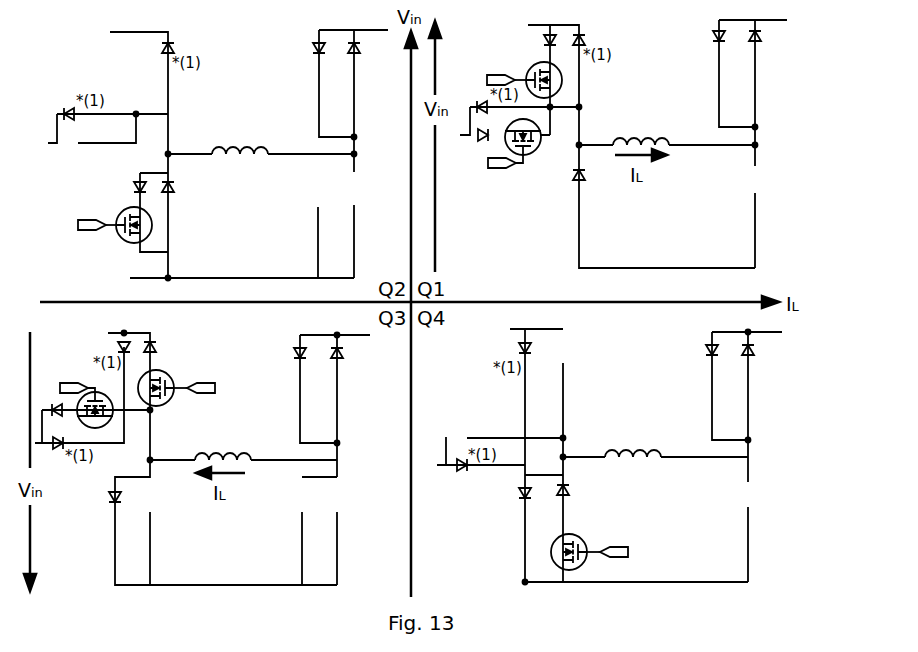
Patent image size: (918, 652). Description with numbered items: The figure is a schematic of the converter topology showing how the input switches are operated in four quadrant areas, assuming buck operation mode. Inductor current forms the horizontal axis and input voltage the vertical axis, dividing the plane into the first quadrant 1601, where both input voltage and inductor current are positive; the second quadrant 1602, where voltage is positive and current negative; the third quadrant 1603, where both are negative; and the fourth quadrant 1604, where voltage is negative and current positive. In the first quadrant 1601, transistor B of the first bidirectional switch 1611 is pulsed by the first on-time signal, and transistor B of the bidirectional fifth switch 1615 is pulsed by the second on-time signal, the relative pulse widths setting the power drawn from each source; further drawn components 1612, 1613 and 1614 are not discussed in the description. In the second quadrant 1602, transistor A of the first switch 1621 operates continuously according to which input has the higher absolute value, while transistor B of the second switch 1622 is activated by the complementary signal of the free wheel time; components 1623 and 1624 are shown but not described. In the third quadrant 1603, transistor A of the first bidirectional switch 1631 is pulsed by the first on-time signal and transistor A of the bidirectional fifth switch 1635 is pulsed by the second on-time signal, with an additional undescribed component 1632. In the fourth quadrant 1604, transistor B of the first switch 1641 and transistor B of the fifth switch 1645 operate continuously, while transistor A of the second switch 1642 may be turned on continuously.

The quadrant Q1 1601 is at (475, 272).
The quadrant Q2 1602 is at (383, 250).
The quadrant Q3 1603 is at (383, 357).
The quadrant Q4 1604 is at (445, 352).
The transistor B of bidirectional switch S1 1611 is at (521, 69).
The diode 1612 is at (583, 186).
The capacitor 1613 is at (750, 183).
The diode pair 1614 is at (712, 42).
The transistor B of bidirectional switch S5p 1615 is at (516, 162).
The transistor S1A 1621 is at (177, 47).
The switch S2B 1622 is at (68, 106).
The switch S2B 1623 is at (114, 217).
The diode pair 1624 is at (311, 56).
The transistor A of bidirectional switch S1 1631 is at (183, 380).
The diode 1632 is at (109, 503).
The transistor A of bidirectional switch S5p 1635 is at (94, 378).
The transistor S1B 1641 is at (532, 348).
The switch S2A 1642 is at (591, 548).
The transistor S5pB 1645 is at (467, 471).